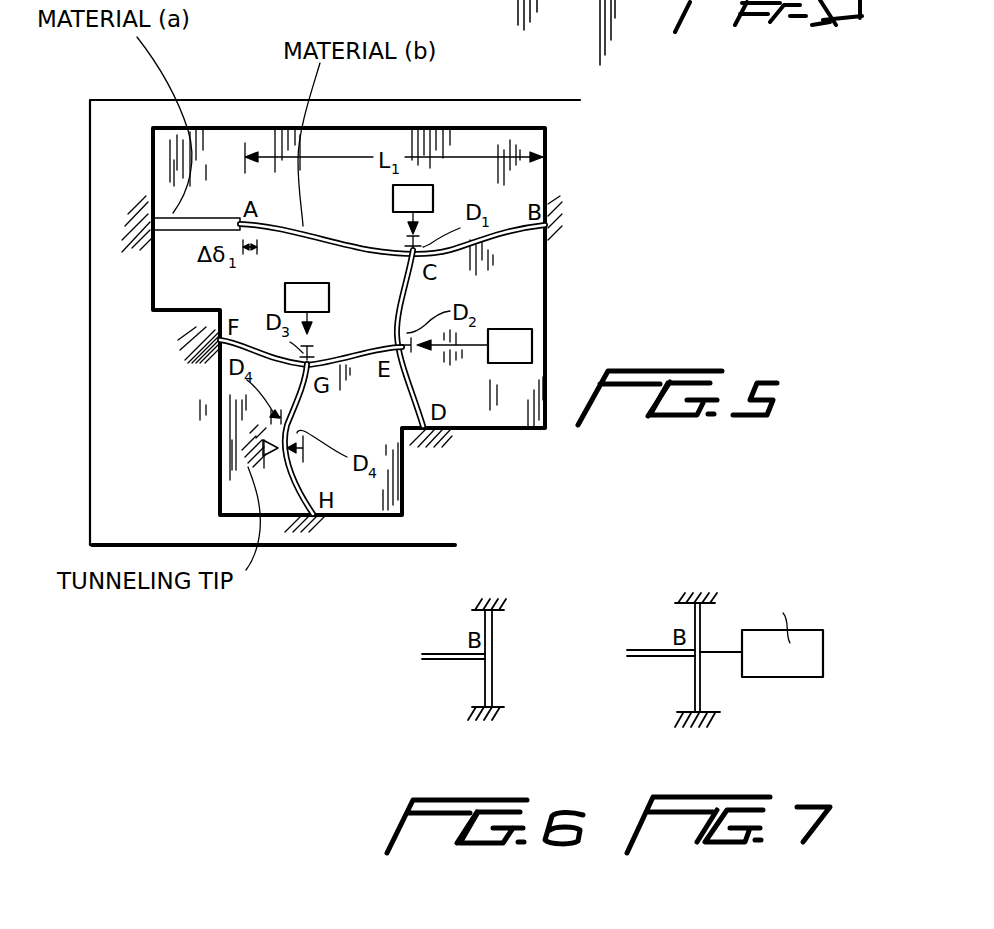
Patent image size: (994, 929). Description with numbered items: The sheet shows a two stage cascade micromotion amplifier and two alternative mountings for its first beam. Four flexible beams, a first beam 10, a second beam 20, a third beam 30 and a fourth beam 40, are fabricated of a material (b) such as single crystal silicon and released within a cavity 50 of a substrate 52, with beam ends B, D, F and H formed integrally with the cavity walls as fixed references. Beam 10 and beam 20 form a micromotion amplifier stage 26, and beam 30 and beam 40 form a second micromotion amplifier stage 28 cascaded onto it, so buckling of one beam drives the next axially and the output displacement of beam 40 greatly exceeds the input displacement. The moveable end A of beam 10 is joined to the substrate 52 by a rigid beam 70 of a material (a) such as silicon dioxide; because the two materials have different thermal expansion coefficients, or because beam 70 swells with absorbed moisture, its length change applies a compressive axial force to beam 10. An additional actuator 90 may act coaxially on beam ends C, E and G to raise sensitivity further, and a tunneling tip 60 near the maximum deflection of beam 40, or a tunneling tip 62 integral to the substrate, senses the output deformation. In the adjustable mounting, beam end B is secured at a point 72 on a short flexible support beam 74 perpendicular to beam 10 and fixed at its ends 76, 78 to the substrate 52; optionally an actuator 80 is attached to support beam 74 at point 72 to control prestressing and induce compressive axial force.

In FIG. 5, the first beam 10 is at (360, 258).
In FIG. 6, the first beam 10 is at (438, 663).
In FIG. 5, the second beam 20 is at (401, 309).
In FIG. 5, the third beam 30 is at (273, 350).
In FIG. 5, the fourth beam 40 is at (303, 405).
In FIG. 5, the micromotion amplifier stage 26 is at (447, 292).
In FIG. 5, the second micromotion amplifier stage 28 is at (197, 387).
In FIG. 5, the cavity 50 is at (147, 142).
In FIG. 5, the substrate 52 is at (117, 200).
In FIG. 7, the substrate 52 is at (712, 588).
In FIG. 5, the tunneling tip 60 is at (248, 450).
In FIG. 5, the tunneling tip 62 is at (267, 443).
In FIG. 5, the rigid beam 70 is at (198, 228).
In FIG. 6, the point 72 is at (493, 657).
In FIG. 7, the point 72 is at (700, 658).
In FIG. 6, the flexible support beam 74 is at (490, 687).
In FIG. 7, the flexible support beam 74 is at (693, 690).
In FIG. 6, the end of support beam 76 is at (493, 620).
In FIG. 6, the end of support beam 78 is at (480, 704).
In FIG. 7, the actuator 80 is at (795, 677).
In FIG. 5, the additional actuator 90 is at (408, 274).